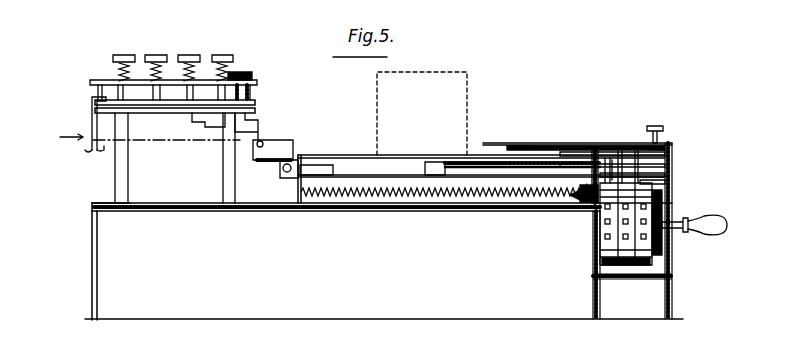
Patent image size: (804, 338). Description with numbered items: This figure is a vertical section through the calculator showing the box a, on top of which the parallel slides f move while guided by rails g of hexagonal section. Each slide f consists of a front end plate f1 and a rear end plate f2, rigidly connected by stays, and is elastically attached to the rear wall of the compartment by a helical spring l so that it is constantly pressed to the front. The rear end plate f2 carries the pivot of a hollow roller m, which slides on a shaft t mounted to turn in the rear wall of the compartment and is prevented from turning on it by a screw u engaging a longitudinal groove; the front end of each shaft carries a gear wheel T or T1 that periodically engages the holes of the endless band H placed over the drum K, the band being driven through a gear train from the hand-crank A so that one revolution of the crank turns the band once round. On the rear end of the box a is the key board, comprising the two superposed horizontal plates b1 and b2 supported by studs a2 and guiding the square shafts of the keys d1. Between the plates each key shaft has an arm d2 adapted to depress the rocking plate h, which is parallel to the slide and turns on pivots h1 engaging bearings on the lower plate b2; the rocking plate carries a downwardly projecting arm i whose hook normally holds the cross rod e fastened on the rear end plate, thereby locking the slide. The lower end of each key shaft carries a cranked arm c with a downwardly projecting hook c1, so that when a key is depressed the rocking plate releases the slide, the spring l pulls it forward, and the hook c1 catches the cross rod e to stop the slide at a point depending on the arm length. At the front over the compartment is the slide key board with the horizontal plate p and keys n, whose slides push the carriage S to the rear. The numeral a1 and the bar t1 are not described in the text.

The box a is at (97, 258).
The upright standard a1 is at (130, 192).
The stud a2 is at (96, 204).
The upper horizontal plate b1 is at (116, 60).
The lower horizontal plate b2 is at (256, 109).
The cranked arm c is at (192, 120).
The hook c1 is at (255, 130).
The key d1 is at (130, 60).
The arm d2 is at (180, 60).
The horizontal cross rod e is at (268, 142).
The slide f is at (481, 154).
The front end plate f1 is at (290, 178).
The rear end plate f2 is at (585, 204).
The rail g is at (215, 186).
The rocking plate h is at (91, 100).
The pivot h1 is at (259, 108).
The arm i is at (92, 151).
The helical spring l is at (406, 198).
The roller m is at (318, 170).
The key n is at (658, 127).
The horizontal plate p is at (515, 146).
The carriage S is at (470, 128).
The shaft t is at (440, 165).
The rack bar t1 is at (470, 160).
The screw u is at (580, 150).
The gear wheel T is at (600, 152).
The gear wheel T1 is at (636, 172).
The endless band H is at (605, 252).
The drum K is at (618, 272).
The hand-crank A is at (683, 218).